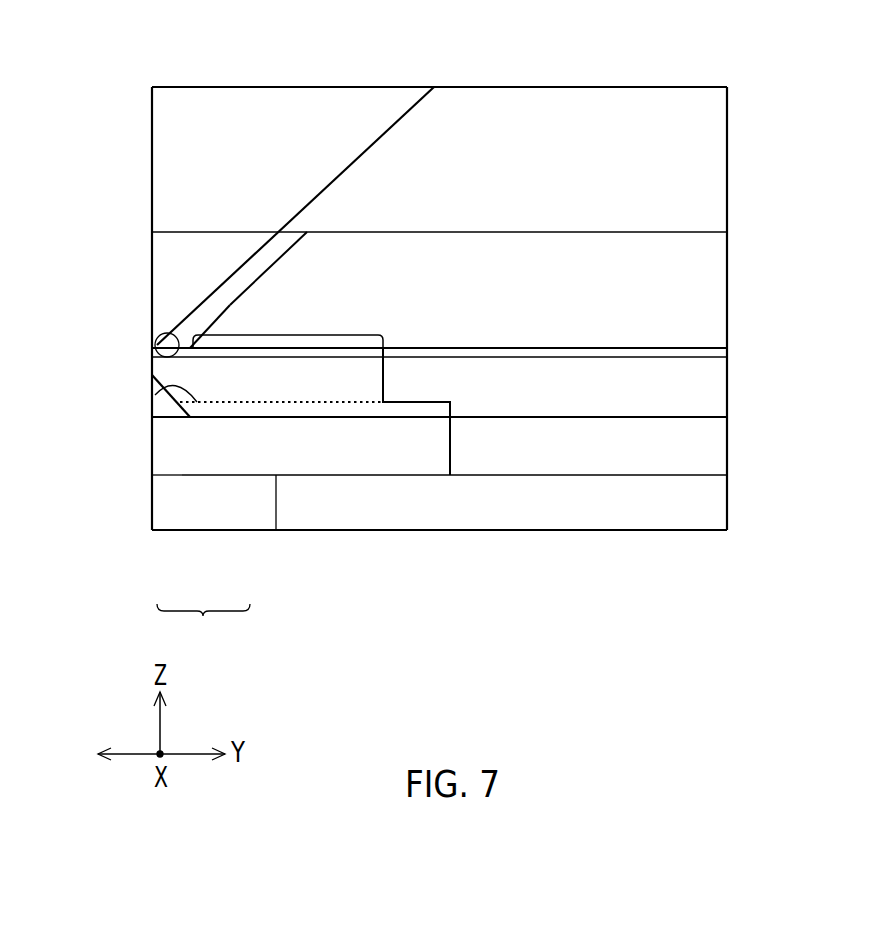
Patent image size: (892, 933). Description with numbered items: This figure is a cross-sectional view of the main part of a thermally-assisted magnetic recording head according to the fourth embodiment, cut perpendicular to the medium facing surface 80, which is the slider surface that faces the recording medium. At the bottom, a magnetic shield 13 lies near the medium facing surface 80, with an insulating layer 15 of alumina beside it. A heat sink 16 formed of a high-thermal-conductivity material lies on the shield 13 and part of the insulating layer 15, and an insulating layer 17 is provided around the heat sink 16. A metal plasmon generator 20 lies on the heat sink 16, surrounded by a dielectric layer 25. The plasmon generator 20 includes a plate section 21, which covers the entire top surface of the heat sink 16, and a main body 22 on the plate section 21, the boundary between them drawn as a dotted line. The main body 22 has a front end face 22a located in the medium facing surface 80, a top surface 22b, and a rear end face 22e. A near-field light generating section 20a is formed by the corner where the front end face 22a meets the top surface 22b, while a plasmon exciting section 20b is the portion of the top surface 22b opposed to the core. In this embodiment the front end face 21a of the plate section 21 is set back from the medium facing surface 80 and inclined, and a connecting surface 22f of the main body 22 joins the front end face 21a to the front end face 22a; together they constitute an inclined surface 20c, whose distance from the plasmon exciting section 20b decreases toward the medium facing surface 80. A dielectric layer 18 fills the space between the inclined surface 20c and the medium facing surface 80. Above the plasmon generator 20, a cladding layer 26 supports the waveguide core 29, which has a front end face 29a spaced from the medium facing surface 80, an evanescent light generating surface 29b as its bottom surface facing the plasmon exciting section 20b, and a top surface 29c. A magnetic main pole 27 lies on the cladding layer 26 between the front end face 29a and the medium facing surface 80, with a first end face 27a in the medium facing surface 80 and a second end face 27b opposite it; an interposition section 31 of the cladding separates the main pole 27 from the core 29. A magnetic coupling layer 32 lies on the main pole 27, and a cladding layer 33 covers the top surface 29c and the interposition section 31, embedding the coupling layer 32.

The medium facing surface 80 is at (148, 104).
The coupling layer 32 is at (152, 155).
The cladding layer 33 is at (727, 155).
The interposition section 31 is at (250, 265).
The core 29 is at (727, 292).
The front end face 29a is at (278, 257).
The evanescent light generating surface 29b is at (474, 355).
The top surface 29c is at (478, 232).
The main pole 27 is at (160, 249).
The first end face 27a is at (152, 280).
The second end face 27b is at (152, 340).
The cladding layer 26 is at (727, 353).
The dielectric layer 25 is at (727, 388).
The plasmon generator 20 is at (73, 372).
The near-field light generating section 20a is at (152, 352).
The plasmon exciting section 20b is at (287, 336).
The inclined surface 20c is at (203, 625).
The plate section 21 is at (152, 411).
The front end face 21a is at (182, 420).
The main body 22 is at (152, 375).
The front end face 22a is at (152, 366).
The top surface 22b is at (343, 357).
The rear end face 22e is at (385, 382).
The connecting surface 22f is at (163, 392).
The dielectric layer 18 is at (152, 420).
The insulating layer 17 is at (727, 447).
The heat sink 16 is at (152, 448).
The insulating layer 15 is at (727, 505).
The shield 13 is at (264, 525).